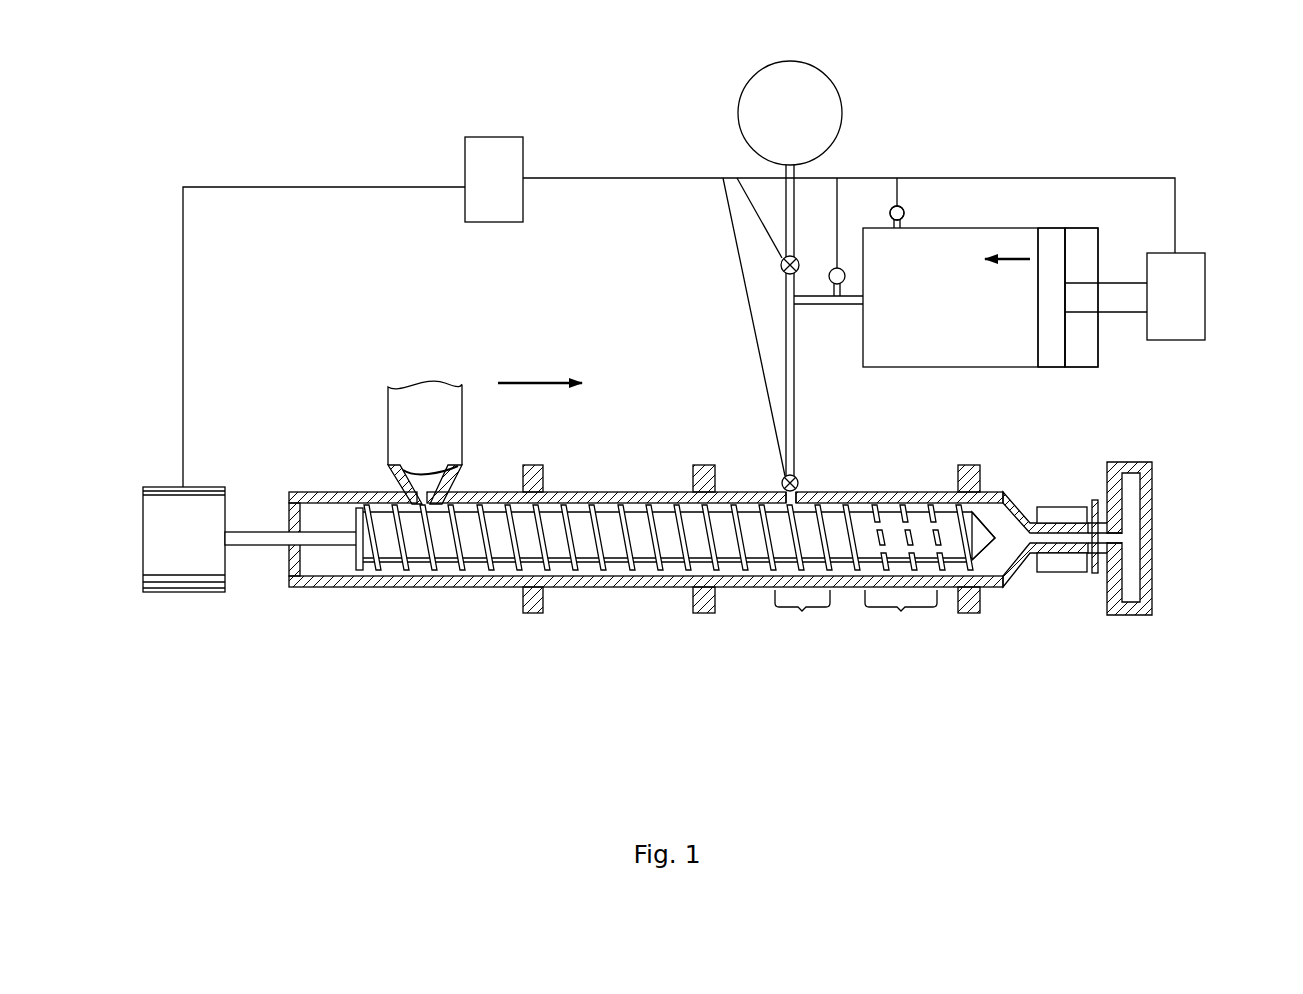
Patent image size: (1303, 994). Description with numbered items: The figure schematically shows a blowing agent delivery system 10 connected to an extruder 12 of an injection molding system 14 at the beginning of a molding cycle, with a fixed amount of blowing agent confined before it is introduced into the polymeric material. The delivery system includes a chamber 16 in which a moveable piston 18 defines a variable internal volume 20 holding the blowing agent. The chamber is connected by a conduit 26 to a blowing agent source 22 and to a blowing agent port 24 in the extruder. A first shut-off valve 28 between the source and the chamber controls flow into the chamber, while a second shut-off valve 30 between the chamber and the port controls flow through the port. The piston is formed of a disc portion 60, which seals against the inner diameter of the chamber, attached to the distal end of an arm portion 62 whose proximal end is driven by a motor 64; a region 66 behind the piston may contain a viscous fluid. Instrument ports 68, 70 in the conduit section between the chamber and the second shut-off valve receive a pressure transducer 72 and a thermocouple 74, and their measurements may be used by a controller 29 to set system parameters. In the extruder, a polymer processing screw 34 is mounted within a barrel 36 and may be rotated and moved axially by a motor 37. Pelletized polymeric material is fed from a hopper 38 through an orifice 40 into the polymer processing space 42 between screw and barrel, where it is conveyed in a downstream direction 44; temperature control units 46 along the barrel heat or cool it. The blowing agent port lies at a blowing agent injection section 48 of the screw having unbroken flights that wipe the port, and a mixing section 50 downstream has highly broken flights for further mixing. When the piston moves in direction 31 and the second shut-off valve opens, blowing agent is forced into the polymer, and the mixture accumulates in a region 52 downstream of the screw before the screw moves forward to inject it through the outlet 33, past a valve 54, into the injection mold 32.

The blowing agent delivery system 10 is at (928, 142).
The extruder 12 is at (496, 298).
The injection molding system 14 is at (588, 736).
The chamber 16 is at (988, 228).
The piston 18 is at (1055, 228).
The internal volume 20 is at (952, 308).
The blowing agent source 22 is at (827, 76).
The blowing agent port 24 is at (800, 497).
The conduit 26 is at (786, 207).
The first shut-off valve 28 is at (784, 270).
The controller 29 is at (481, 191).
The second shut-off valve 30 is at (797, 479).
The direction of piston motion 31 is at (999, 256).
The injection mold 32 is at (1135, 462).
The outlet 33 is at (1060, 530).
The polymer processing screw 34 is at (655, 512).
The barrel 36 is at (405, 588).
The motor 37 is at (188, 592).
The hopper 38 is at (418, 403).
The orifice 40 is at (397, 468).
The polymer processing space 42 is at (565, 500).
The downstream direction 44 is at (548, 383).
The temperature control units 46 is at (541, 465).
The blowing agent injection section 48 is at (802, 616).
The mixing section 50 is at (901, 616).
The region 52 is at (990, 512).
The valve 54 is at (1095, 500).
The disc portion 60 is at (1038, 332).
The arm portion 62 is at (1117, 283).
The motor 64 is at (1205, 283).
The region 66 is at (1090, 338).
The instrument port 68 is at (835, 306).
The instrument port 70 is at (890, 220).
The pressure transducer 72 is at (829, 272).
The thermocouple 74 is at (905, 211).